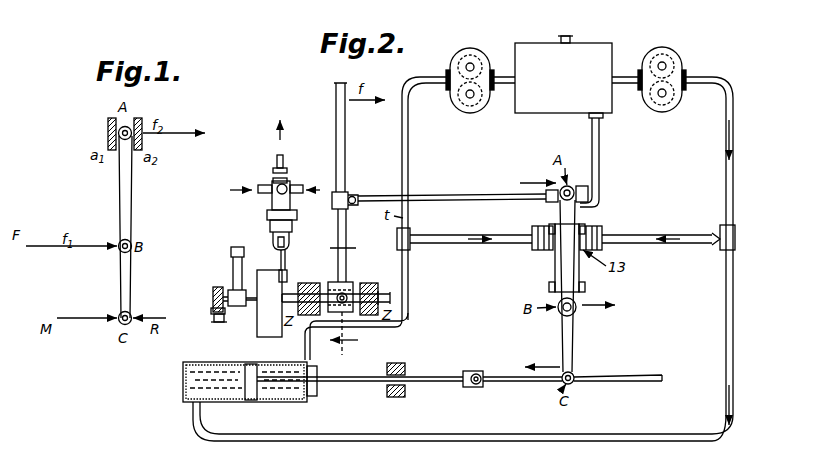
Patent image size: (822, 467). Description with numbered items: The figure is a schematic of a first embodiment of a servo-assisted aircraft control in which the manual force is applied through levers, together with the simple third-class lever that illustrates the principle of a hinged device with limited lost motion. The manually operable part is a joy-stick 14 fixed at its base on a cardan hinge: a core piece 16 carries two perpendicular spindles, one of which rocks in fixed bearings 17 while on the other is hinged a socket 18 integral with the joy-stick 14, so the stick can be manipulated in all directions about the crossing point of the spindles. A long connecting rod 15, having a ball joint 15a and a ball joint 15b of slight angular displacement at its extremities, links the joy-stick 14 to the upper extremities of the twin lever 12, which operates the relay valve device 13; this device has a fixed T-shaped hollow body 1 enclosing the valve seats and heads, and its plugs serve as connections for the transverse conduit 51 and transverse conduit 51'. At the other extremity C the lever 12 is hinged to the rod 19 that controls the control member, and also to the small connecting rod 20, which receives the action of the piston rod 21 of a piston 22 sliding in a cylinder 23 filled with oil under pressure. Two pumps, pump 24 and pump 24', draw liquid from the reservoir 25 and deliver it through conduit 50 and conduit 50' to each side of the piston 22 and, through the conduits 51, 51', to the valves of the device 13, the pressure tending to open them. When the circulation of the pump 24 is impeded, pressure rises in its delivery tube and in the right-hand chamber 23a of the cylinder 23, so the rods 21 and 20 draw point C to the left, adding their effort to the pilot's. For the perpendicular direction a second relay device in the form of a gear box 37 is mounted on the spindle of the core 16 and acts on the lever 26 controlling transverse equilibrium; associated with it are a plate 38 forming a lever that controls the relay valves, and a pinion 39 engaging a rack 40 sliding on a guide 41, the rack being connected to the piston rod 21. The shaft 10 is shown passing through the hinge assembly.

The T-shaped hollow body 1 is at (555, 256).
The shaft 10 is at (348, 284).
The twin lever 12 is at (575, 334).
The relay valve device 13 is at (266, 202).
The joy-stick 14 is at (336, 130).
The connecting rod 15 is at (472, 195).
The ball joint 15a is at (590, 198).
The ball joint 15b is at (356, 193).
The core piece 16 is at (350, 283).
The fixed bearing 17 is at (312, 283).
The socket 18 is at (330, 282).
The rod 19 is at (632, 383).
The small connecting rod 20 is at (510, 384).
The piston rod 21 is at (366, 382).
The piston 22 is at (255, 400).
The cylinder 23 is at (230, 402).
The right-hand chamber 23a is at (312, 396).
The pump 24 is at (470, 68).
The pump 24' is at (666, 66).
The reservoir 25 is at (540, 102).
The lever 26 is at (236, 272).
The gear box 37 is at (266, 337).
The plate 38 is at (281, 258).
The pinion 39 is at (213, 292).
The rack 40 is at (212, 310).
The guide 41 is at (217, 322).
The conduit 50 is at (452, 259).
The conduit 50' is at (728, 259).
The transverse conduit 51 is at (464, 251).
The transverse conduit 51' is at (668, 250).